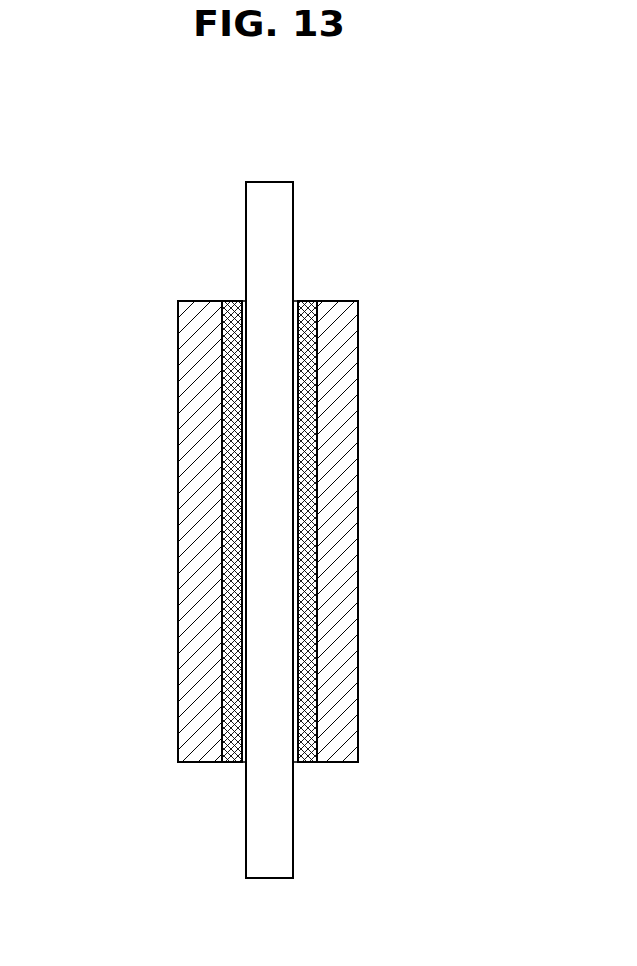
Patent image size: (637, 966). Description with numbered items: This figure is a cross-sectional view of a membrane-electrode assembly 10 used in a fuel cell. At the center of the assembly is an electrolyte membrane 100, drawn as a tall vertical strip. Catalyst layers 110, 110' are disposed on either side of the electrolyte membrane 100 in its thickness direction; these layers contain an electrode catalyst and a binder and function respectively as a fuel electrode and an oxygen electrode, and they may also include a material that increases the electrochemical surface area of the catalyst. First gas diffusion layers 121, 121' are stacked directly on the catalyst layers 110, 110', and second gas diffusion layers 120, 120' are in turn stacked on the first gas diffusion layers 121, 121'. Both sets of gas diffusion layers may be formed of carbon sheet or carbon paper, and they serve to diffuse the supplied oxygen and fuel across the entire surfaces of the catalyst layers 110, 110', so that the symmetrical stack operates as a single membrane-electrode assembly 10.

The membrane-electrode assembly 10 is at (135, 215).
The electrolyte membrane 100 is at (268, 188).
The catalyst layer 110 is at (219, 570).
The catalyst layer 110' is at (320, 570).
The second gas diffusion layer 120 is at (147, 531).
The second gas diffusion layer 120' is at (396, 531).
The first gas diffusion layer 121 is at (211, 495).
The first gas diffusion layer 121' is at (329, 495).